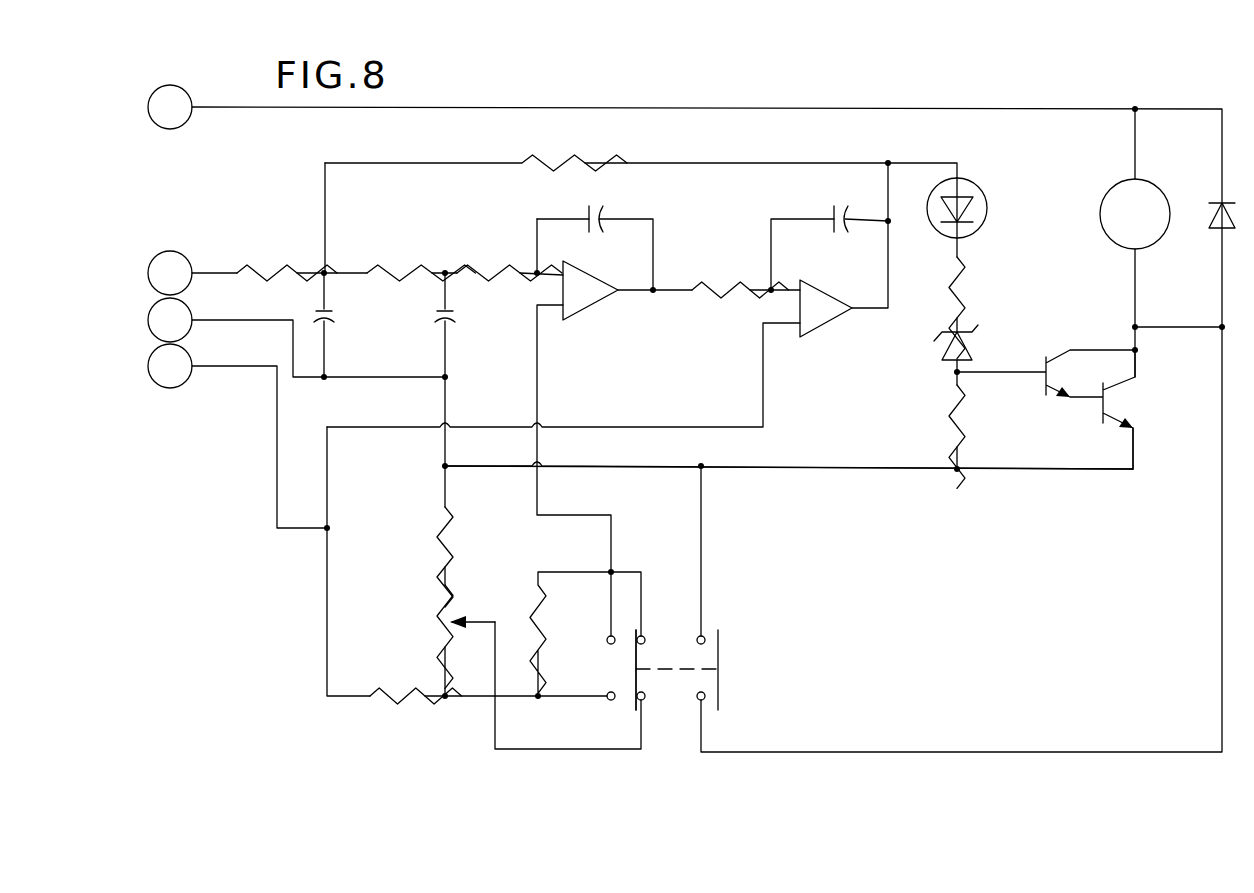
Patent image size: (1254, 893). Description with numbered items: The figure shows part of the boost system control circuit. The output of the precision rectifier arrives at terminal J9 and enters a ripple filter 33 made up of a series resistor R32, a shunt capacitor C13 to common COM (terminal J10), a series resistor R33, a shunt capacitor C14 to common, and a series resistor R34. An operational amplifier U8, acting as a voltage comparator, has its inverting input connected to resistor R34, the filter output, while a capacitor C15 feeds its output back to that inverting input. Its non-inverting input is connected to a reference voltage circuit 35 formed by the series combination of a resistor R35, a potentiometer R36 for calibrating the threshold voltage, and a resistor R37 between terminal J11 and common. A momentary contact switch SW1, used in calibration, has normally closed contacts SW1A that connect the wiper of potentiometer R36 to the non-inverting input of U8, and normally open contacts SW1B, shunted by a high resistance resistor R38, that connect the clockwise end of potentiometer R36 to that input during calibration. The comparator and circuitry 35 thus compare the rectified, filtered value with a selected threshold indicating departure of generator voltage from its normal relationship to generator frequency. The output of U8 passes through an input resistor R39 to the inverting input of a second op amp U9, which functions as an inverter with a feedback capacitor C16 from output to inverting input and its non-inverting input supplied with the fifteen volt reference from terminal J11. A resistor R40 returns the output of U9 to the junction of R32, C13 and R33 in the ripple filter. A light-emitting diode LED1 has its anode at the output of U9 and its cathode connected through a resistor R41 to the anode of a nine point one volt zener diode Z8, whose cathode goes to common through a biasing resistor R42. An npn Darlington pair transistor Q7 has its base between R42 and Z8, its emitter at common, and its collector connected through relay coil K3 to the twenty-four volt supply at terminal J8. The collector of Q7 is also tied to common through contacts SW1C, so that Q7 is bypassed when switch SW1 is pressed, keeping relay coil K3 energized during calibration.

The terminal J8 is at (170, 107).
The terminal J9 is at (170, 273).
The terminal J10 is at (170, 320).
The terminal J11 is at (170, 366).
The series resistor R32 is at (252, 272).
The series resistor R33 is at (410, 262).
The series resistor R34 is at (487, 265).
The resistor R35 is at (380, 700).
The potentiometer R36 is at (441, 596).
The resistor R37 is at (442, 518).
The high resistance resistor R38 is at (535, 588).
The input resistor R39 is at (693, 280).
The resistor R40 is at (567, 152).
The resistor R41 is at (968, 272).
The biasing resistor R42 is at (964, 432).
The shunt capacitor C13 is at (336, 322).
The shunt capacitor C14 is at (457, 322).
The capacitor C15 is at (606, 216).
The feedback capacitor C16 is at (843, 210).
The operational amplifier U8 is at (590, 291).
The op amp U9 is at (826, 309).
The light-emitting diode LED1 is at (975, 190).
The relay coil K3 is at (1135, 214).
The zener diode Z8 is at (974, 345).
The npn Darlington pair transistor Q7 is at (1110, 343).
The common COM is at (843, 470).
The momentary contact switch SW1 is at (722, 685).
The normally closed contacts SW1A is at (645, 700).
The normally open contacts SW1B is at (605, 700).
The normally open contacts SW1C is at (705, 640).
The ripple filter 33 is at (360, 250).
The reference voltage circuit 35 is at (296, 675).